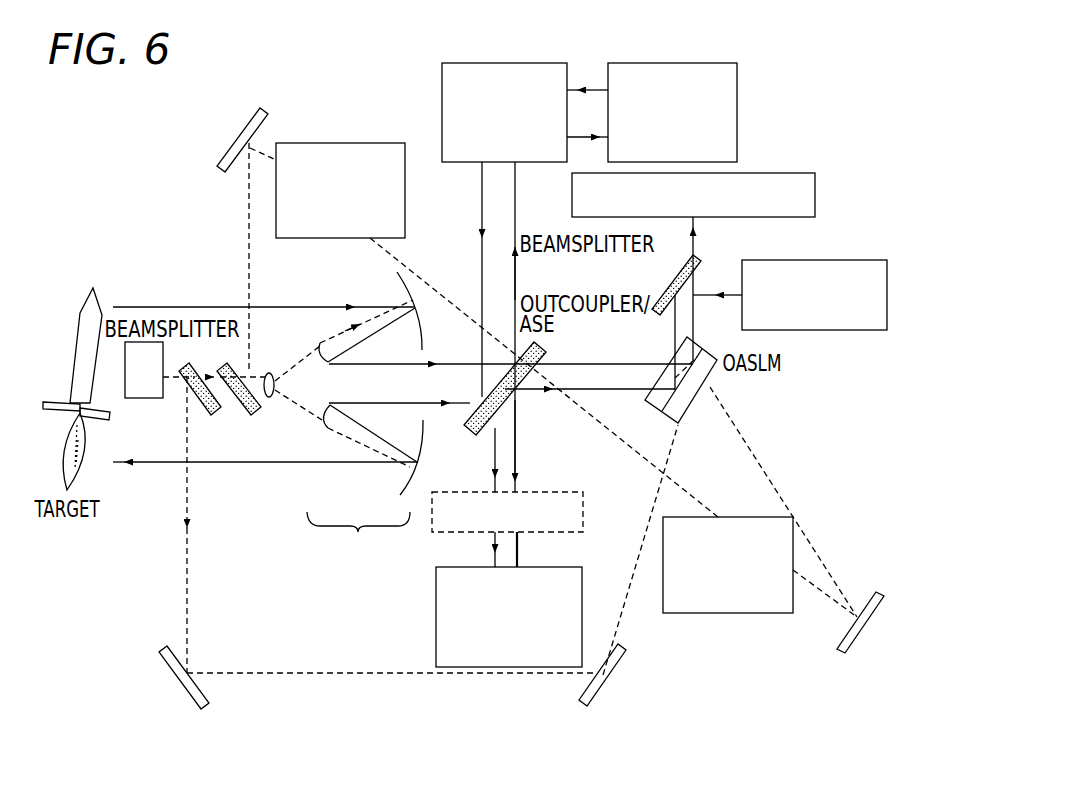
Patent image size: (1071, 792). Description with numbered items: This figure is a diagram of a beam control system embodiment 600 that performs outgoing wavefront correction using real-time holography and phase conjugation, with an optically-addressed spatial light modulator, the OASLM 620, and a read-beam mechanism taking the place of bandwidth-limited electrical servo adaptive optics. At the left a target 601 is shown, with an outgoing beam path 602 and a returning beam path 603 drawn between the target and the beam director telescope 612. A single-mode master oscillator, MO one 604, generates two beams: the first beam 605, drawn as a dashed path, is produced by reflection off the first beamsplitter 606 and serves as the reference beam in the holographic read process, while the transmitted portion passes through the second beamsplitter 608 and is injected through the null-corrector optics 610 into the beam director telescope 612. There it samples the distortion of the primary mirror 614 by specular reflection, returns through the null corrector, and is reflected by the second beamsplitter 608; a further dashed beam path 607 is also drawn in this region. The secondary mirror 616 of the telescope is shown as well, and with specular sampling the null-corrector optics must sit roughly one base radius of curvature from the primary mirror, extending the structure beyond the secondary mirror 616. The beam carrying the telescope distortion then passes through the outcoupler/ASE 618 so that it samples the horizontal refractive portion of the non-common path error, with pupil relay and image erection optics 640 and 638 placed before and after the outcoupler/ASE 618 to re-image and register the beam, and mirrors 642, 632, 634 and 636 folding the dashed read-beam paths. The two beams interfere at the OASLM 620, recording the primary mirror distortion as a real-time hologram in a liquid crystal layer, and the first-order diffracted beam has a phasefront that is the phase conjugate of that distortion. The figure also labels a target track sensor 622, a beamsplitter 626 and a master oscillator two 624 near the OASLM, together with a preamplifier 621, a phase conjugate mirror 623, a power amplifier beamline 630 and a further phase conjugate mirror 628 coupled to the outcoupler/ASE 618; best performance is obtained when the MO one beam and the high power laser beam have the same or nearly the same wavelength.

The beam control system embodiment 600 is at (80, 182).
The target 601 is at (74, 341).
The outgoing beam path 602 is at (173, 305).
The return beam path 603 is at (258, 463).
The master oscillator 604 is at (138, 399).
The first beam 605 is at (186, 595).
The first beamsplitter 606 is at (206, 414).
The dashed beam path 607 is at (248, 217).
The second beamsplitter 608 is at (248, 345).
The null-corrector optics 610 is at (268, 372).
The beam director telescope 612 is at (382, 567).
The primary mirror 614 is at (405, 495).
The secondary mirror 616 is at (320, 342).
The outcoupler/ASE 618 is at (465, 422).
The optically-addressed spatial light modulator 620 is at (707, 380).
The preamplifier 621 is at (432, 518).
The target track sensor 622 is at (818, 193).
The phase conjugate mirror 623 is at (582, 595).
The master oscillator 2 624 is at (818, 331).
The beamsplitter 626 is at (672, 282).
The phase conjugate mirror 628 is at (683, 62).
The power amplifier beamline 630 is at (503, 62).
The mirror 632 is at (160, 665).
The mirror 634 is at (622, 664).
The mirror 636 is at (860, 645).
The pupil relay and image erection optics 638 is at (745, 614).
The pupil relay and image erection optics 640 is at (340, 143).
The mirror 642 is at (245, 127).